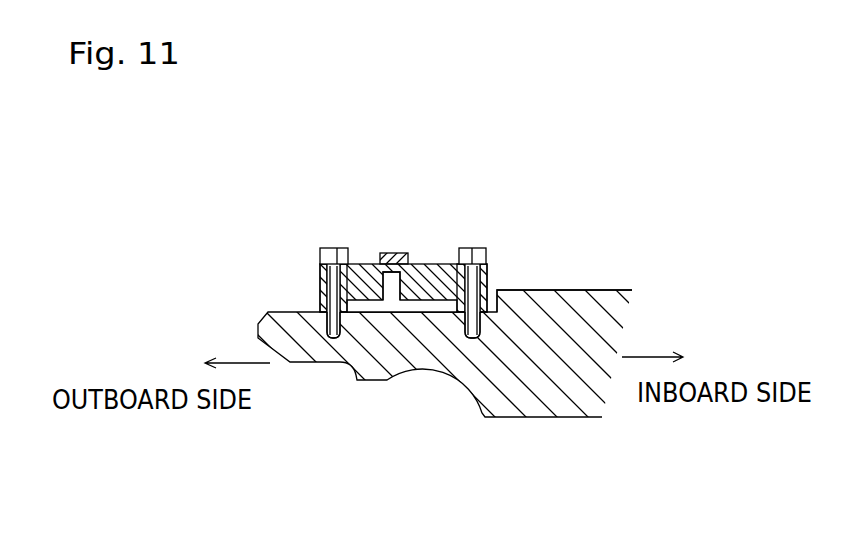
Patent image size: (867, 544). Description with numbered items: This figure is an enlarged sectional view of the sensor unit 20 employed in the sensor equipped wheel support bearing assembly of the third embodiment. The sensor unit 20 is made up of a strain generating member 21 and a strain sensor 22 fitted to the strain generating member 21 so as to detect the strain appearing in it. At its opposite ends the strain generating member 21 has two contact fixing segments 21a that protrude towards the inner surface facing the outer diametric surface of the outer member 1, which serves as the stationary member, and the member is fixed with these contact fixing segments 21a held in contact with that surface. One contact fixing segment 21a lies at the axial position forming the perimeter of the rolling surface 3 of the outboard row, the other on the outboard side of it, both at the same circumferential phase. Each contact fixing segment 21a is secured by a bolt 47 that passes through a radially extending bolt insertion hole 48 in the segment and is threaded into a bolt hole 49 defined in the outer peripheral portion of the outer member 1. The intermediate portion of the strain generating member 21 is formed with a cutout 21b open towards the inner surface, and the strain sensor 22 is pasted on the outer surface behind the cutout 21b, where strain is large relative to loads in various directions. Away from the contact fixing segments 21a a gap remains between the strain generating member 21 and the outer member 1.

The outer member 1 is at (552, 289).
The rolling surface 3 is at (427, 378).
The sensor unit 20 is at (402, 271).
The strain generating member 21 is at (402, 314).
The contact fixing segment 21a is at (456, 308).
The cutout 21b is at (392, 279).
The strain sensor 22 is at (391, 253).
The bolt 47 is at (328, 248).
The bolt insertion hole 48 is at (320, 276).
The bolt hole 49 is at (333, 339).